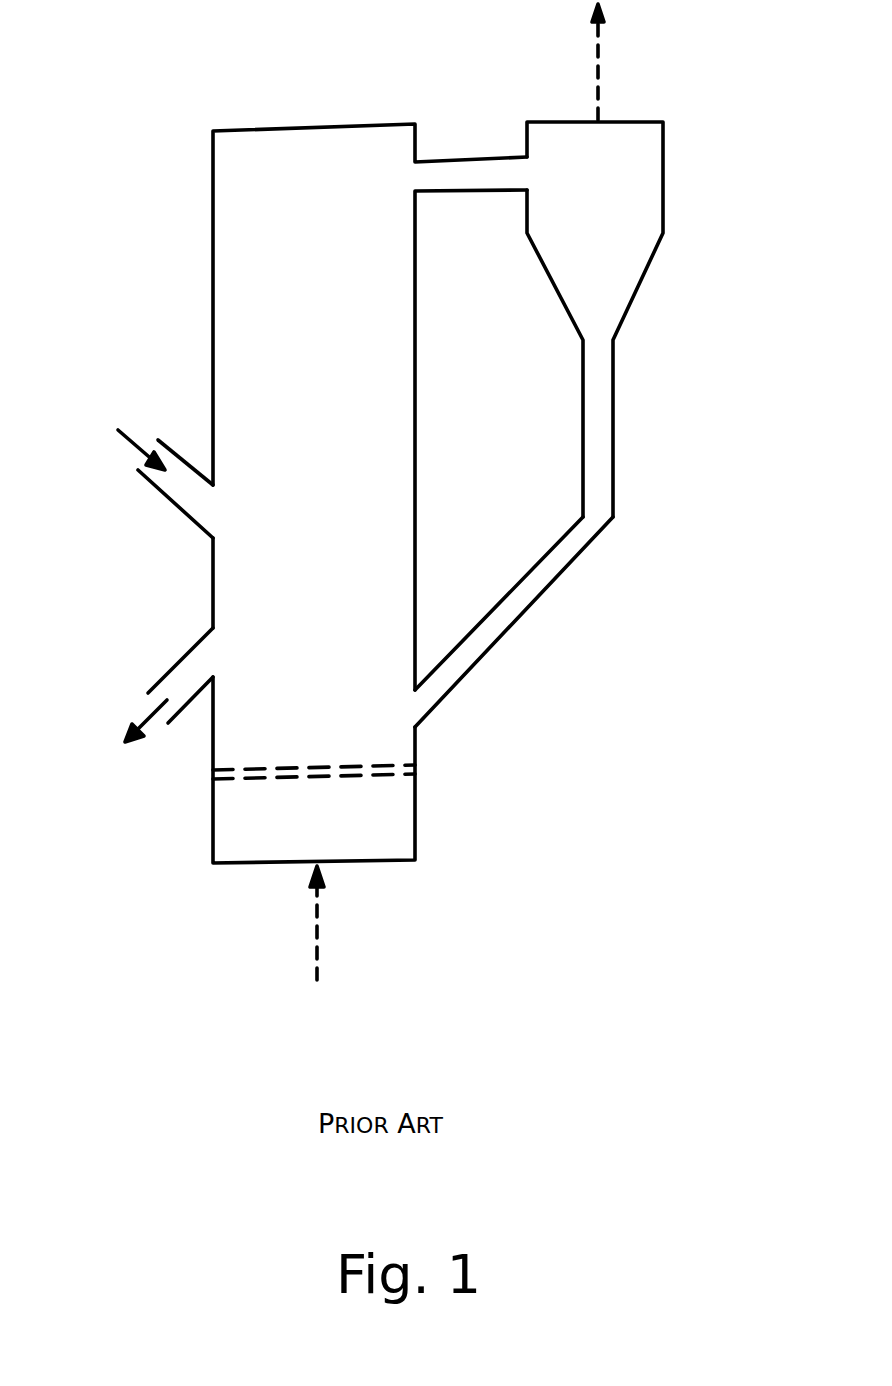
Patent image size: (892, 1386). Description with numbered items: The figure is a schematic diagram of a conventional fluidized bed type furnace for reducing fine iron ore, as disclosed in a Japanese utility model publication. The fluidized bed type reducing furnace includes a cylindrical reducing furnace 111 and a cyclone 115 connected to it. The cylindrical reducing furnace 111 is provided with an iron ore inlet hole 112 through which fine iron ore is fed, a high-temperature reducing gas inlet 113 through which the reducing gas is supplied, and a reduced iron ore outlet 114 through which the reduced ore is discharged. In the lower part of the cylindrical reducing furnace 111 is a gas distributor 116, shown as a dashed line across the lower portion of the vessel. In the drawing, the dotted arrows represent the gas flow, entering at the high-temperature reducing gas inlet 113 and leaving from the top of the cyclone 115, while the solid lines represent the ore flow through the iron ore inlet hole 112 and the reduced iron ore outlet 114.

The cylindrical reducing furnace 111 is at (415, 420).
The iron ore inlet hole 112 is at (165, 498).
The high-temperature reducing gas inlet 113 is at (317, 937).
The reduced iron ore outlet 114 is at (168, 667).
The cyclone 115 is at (663, 190).
The gas distributor 116 is at (415, 755).